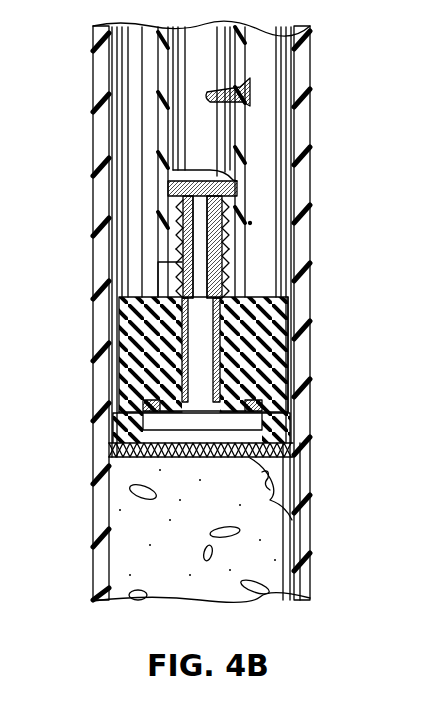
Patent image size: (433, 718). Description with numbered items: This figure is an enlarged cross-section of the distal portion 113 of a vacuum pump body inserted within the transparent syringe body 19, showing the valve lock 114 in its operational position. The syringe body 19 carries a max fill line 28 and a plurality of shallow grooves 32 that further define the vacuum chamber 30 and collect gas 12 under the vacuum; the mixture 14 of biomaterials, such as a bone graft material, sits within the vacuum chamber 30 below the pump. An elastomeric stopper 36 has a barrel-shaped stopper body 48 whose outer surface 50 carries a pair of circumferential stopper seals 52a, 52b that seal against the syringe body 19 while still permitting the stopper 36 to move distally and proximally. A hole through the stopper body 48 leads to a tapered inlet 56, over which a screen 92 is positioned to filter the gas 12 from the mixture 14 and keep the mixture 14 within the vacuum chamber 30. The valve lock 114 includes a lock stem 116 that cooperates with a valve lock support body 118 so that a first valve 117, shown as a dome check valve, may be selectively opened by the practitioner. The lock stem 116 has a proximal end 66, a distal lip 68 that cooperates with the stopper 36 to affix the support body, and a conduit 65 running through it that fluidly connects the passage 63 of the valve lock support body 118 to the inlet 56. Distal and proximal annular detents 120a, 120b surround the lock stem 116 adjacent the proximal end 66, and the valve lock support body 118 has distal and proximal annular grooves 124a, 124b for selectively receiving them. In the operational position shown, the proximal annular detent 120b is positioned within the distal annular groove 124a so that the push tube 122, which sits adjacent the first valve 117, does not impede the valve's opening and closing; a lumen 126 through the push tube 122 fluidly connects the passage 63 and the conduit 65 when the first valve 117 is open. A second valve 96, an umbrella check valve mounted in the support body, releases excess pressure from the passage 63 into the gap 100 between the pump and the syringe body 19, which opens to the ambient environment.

The gas 12 is at (296, 522).
The mixture of biomaterials 14 is at (290, 545).
The syringe body 19 is at (97, 62).
The max fill line 28 is at (93, 465).
The vacuum chamber 30 is at (228, 553).
The grooves 32 is at (298, 572).
The stopper 36 is at (165, 278).
The stopper body 48 is at (285, 352).
The outer surface 50 is at (125, 372).
The stopper seal 52a is at (145, 330).
The stopper seal 52b is at (150, 403).
The inlet 56 is at (285, 432).
The passage 63 is at (180, 90).
The conduit 65 is at (296, 372).
The proximal end 66 is at (183, 232).
The distal lip 68 is at (180, 420).
The screen 92 is at (293, 483).
The second valve 96 is at (255, 97).
The gap 100 is at (262, 80).
The distal portion 113 is at (148, 138).
The valve lock 114 is at (250, 223).
The lock stem 116 is at (292, 305).
The first valve 117 is at (240, 183).
The valve lock support body 118 is at (247, 145).
The distal annular detent 120a is at (176, 268).
The proximal annular detent 120b is at (178, 250).
The push tube 122 is at (246, 207).
The distal annular groove 124a is at (230, 248).
The proximal annular groove 124b is at (230, 227).
The lumen 126 is at (185, 297).